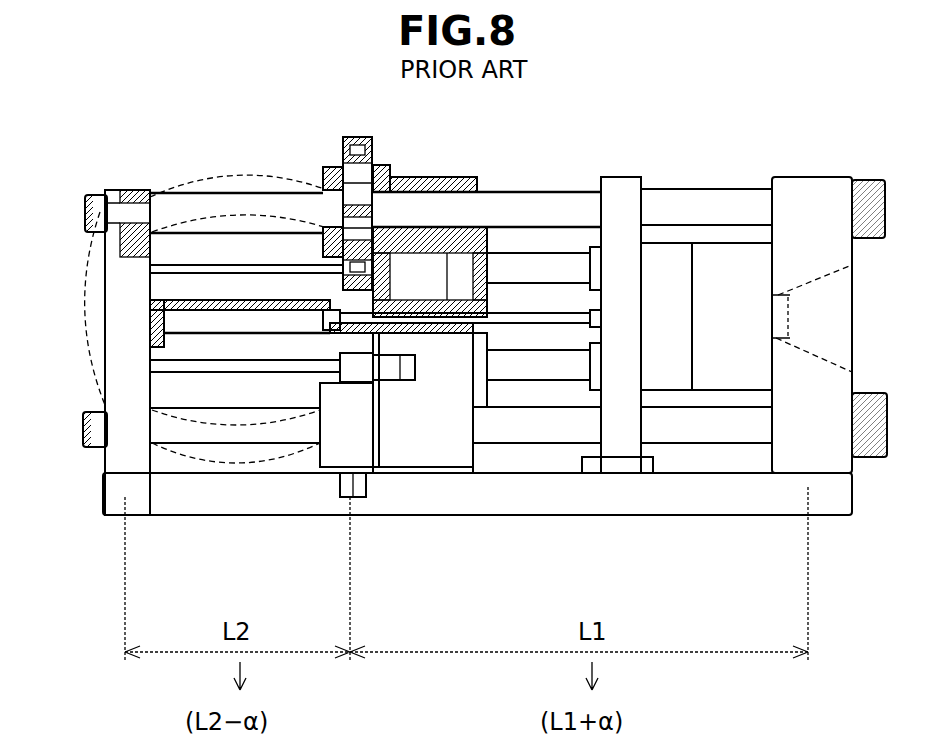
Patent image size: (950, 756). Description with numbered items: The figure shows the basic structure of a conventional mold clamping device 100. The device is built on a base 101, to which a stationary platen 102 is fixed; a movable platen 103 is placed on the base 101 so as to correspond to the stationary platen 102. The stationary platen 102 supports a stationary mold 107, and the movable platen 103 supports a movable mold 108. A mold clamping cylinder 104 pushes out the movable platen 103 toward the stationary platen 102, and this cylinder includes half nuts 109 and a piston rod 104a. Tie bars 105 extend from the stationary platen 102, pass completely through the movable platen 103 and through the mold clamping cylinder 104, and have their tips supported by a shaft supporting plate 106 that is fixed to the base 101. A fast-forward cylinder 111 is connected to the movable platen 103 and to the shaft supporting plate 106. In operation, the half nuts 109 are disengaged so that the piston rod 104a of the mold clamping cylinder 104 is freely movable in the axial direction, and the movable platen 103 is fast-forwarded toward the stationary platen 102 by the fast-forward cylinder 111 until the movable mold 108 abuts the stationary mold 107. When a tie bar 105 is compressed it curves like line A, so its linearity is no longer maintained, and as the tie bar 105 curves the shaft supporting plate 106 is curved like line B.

The mold clamping device 100 is at (627, 106).
The base 101 is at (526, 503).
The stationary platen 102 is at (808, 200).
The movable platen 103 is at (621, 195).
The mold clamping cylinder 104 is at (433, 177).
The piston rod 104a is at (508, 273).
The tie bars 105 is at (570, 205).
The shaft supporting plate 106 is at (135, 190).
The stationary mold 107 is at (718, 262).
The movable mold 108 is at (660, 262).
The half nuts 109 is at (345, 198).
The fast-forward cylinder 111 is at (243, 320).
The line A is at (218, 178).
The line B is at (88, 318).